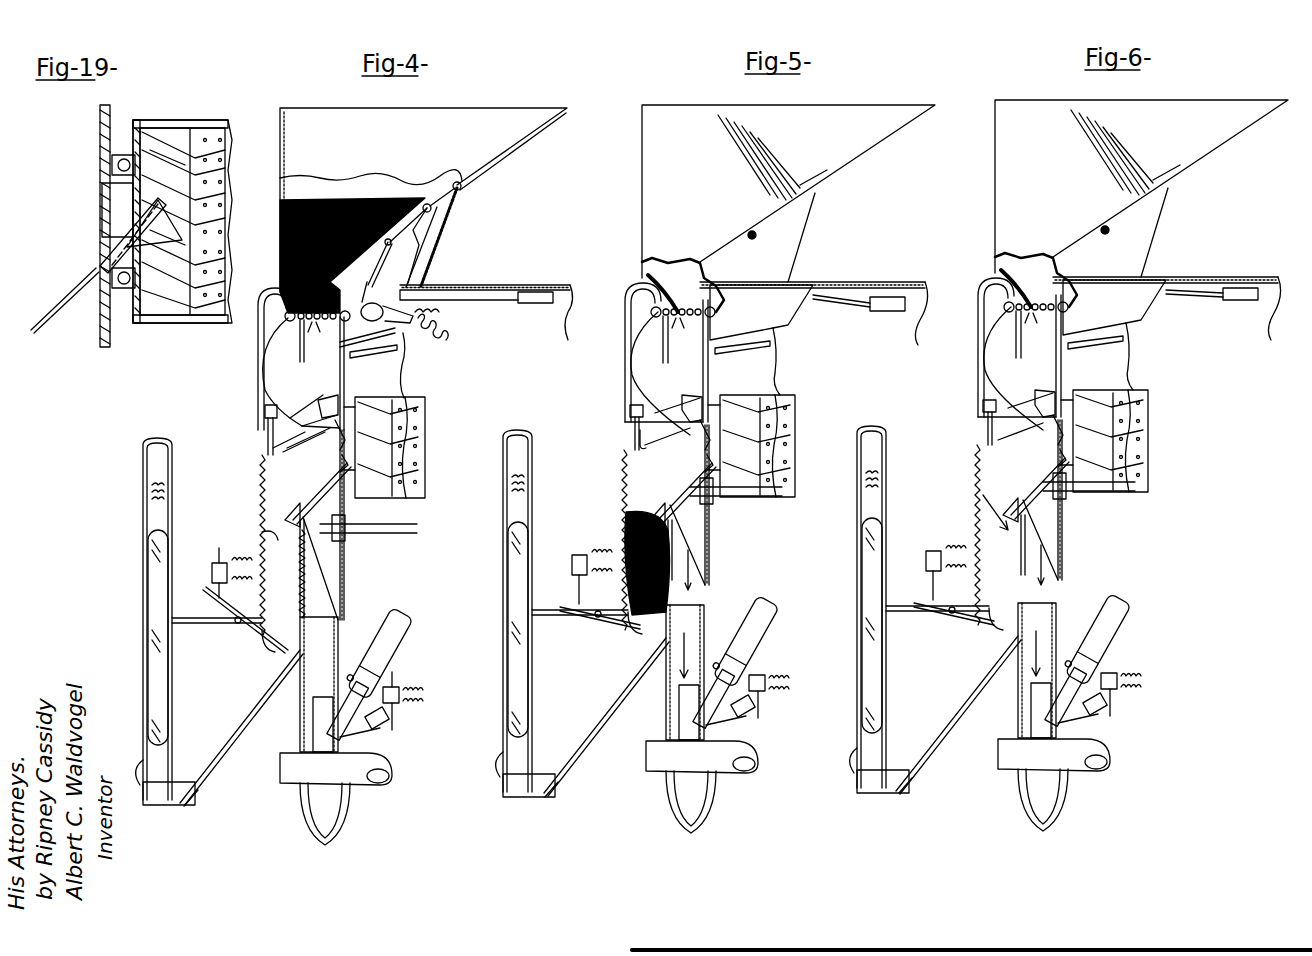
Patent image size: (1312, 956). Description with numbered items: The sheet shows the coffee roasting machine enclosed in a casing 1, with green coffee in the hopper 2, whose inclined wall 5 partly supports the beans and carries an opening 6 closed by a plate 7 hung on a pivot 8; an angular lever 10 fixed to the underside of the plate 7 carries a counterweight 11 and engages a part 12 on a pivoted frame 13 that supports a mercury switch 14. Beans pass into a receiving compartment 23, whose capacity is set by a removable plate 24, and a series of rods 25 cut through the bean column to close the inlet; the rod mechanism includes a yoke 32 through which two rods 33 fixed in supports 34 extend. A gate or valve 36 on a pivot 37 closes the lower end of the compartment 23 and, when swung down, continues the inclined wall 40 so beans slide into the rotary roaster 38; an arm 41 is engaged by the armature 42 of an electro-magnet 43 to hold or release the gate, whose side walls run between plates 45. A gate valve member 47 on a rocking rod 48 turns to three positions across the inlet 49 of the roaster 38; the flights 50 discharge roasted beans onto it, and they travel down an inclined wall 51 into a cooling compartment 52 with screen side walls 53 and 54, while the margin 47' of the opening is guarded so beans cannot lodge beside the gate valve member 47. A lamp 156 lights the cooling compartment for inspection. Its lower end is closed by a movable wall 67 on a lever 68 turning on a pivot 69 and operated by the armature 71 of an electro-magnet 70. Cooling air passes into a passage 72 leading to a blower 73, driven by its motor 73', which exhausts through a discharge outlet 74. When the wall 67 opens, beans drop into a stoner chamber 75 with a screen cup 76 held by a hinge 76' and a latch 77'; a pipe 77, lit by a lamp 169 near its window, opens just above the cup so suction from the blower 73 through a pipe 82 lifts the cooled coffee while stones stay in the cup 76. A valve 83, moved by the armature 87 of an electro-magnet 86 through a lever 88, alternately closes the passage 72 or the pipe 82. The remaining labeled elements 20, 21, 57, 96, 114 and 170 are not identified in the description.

In FIG. 4, the casing 1 is at (551, 285).
In FIG. 5, the casing 1 is at (885, 282).
In FIG. 6, the casing 1 is at (1117, 332).
In FIG. 4, the hopper 2 is at (280, 149).
In FIG. 5, the hopper 2 is at (650, 160).
In FIG. 6, the hopper 2 is at (1130, 203).
In FIG. 4, the inclined wall 5 is at (455, 181).
In FIG. 5, the inclined wall 5 is at (835, 170).
In FIG. 6, the inclined wall 5 is at (1206, 166).
In FIG. 4, the opening 6 is at (375, 268).
In FIG. 4, the plate 7 is at (385, 280).
In FIG. 4, the pivot 8 is at (432, 207).
In FIG. 4, the angular lever 10 is at (426, 239).
In FIG. 5, the angular lever 10 is at (843, 305).
In FIG. 6, the angular lever 10 is at (1194, 304).
In FIG. 4, the counterweight 11 is at (535, 303).
In FIG. 5, the counterweight 11 is at (890, 311).
In FIG. 6, the counterweight 11 is at (1240, 303).
In FIG. 4, the part 12 is at (424, 260).
In FIG. 4, the pivoted frame 13 is at (361, 288).
In FIG. 4, the mercury switch 14 is at (399, 321).
In FIG. 5, the mercury switch 14 is at (732, 325).
In FIG. 4, the plate 20 is at (442, 220).
In FIG. 5, the plate 20 is at (799, 240).
In FIG. 6, the plate 20 is at (1164, 221).
In FIG. 5, the pivot 21 is at (752, 240).
In FIG. 6, the pivot 21 is at (1113, 243).
In FIG. 4, the receiving compartment 23 is at (264, 362).
In FIG. 5, the receiving compartment 23 is at (630, 382).
In FIG. 6, the receiving compartment 23 is at (993, 368).
In FIG. 4, the plate 24 is at (305, 352).
In FIG. 5, the plate 24 is at (669, 352).
In FIG. 6, the plate 24 is at (1031, 334).
In FIG. 4, the rods 25 is at (316, 332).
In FIG. 5, the rods 25 is at (682, 329).
In FIG. 6, the rods 25 is at (1035, 324).
In FIG. 4, the yoke 32 is at (304, 452).
In FIG. 4, the rods 33 is at (316, 312).
In FIG. 5, the rods 33 is at (715, 310).
In FIG. 6, the rods 33 is at (1047, 313).
In FIG. 4, the supports 34 is at (290, 314).
In FIG. 5, the supports 34 is at (705, 305).
In FIG. 6, the supports 34 is at (1047, 292).
In FIG. 4, the gate or valve 36 is at (328, 436).
In FIG. 5, the gate or valve 36 is at (695, 428).
In FIG. 6, the gate or valve 36 is at (1048, 423).
In FIG. 4, the pivot 37 is at (341, 399).
In FIG. 5, the pivot 37 is at (667, 443).
In FIG. 6, the pivot 37 is at (1020, 436).
In FIG. 19, the rotary roaster 38 is at (222, 122).
In FIG. 4, the rotary roaster 38 is at (415, 435).
In FIG. 5, the rotary roaster 38 is at (782, 425).
In FIG. 6, the rotary roaster 38 is at (1127, 441).
In FIG. 4, the inclined wall 40 is at (312, 408).
In FIG. 5, the inclined wall 40 is at (669, 394).
In FIG. 6, the inclined wall 40 is at (1025, 389).
In FIG. 4, the arm 41 is at (290, 456).
In FIG. 4, the armature 42 is at (268, 440).
In FIG. 4, the electro-magnet 43 is at (265, 406).
In FIG. 4, the plates 45 is at (322, 398).
In FIG. 5, the plates 45 is at (692, 398).
In FIG. 6, the plates 45 is at (1045, 391).
In FIG. 19, the gate valve member 47 is at (126, 217).
In FIG. 4, the gate valve member 47 is at (329, 464).
In FIG. 5, the gate valve member 47 is at (692, 463).
In FIG. 6, the gate valve member 47 is at (1052, 451).
In FIG. 19, the marginal portion 47' is at (97, 210).
In FIG. 19, the rocking rod 48 is at (125, 235).
In FIG. 4, the rocking rod 48 is at (340, 484).
In FIG. 5, the rocking rod 48 is at (705, 480).
In FIG. 6, the rocking rod 48 is at (1048, 500).
In FIG. 19, the inlet 49 is at (160, 323).
In FIG. 4, the inlet 49 is at (412, 400).
In FIG. 5, the inlet 49 is at (748, 395).
In FIG. 6, the inlet 49 is at (1103, 378).
In FIG. 19, the flights 50 is at (215, 195).
In FIG. 4, the flights 50 is at (388, 400).
In FIG. 5, the flights 50 is at (778, 395).
In FIG. 6, the flights 50 is at (1111, 436).
In FIG. 4, the inclined wall 51 is at (315, 492).
In FIG. 5, the inclined wall 51 is at (683, 495).
In FIG. 6, the inclined wall 51 is at (1036, 490).
In FIG. 4, the cooling compartment 52 is at (262, 532).
In FIG. 5, the cooling compartment 52 is at (626, 535).
In FIG. 6, the cooling compartment 52 is at (975, 514).
In FIG. 4, the side wall 53 is at (258, 500).
In FIG. 5, the side wall 53 is at (622, 470).
In FIG. 6, the side wall 53 is at (962, 535).
In FIG. 5, the side wall 54 is at (680, 560).
In FIG. 6, the side wall 54 is at (1059, 542).
In FIG. 19, the lever 57 is at (65, 300).
In FIG. 4, the lever 57 is at (315, 580).
In FIG. 4, the movable wall 67 is at (270, 654).
In FIG. 5, the movable wall 67 is at (642, 631).
In FIG. 6, the movable wall 67 is at (998, 627).
In FIG. 4, the lever 68 is at (250, 635).
In FIG. 5, the lever 68 is at (600, 629).
In FIG. 6, the lever 68 is at (954, 624).
In FIG. 4, the pivot 69 is at (235, 624).
In FIG. 5, the pivot 69 is at (589, 627).
In FIG. 6, the pivot 69 is at (944, 622).
In FIG. 4, the electro-magnet 70 is at (212, 574).
In FIG. 5, the electro-magnet 70 is at (581, 563).
In FIG. 6, the electro-magnet 70 is at (935, 559).
In FIG. 4, the armature 71 is at (219, 551).
In FIG. 5, the armature 71 is at (566, 589).
In FIG. 6, the armature 71 is at (919, 585).
In FIG. 4, the passage 72 is at (330, 635).
In FIG. 5, the passage 72 is at (697, 672).
In FIG. 6, the passage 72 is at (1050, 670).
In FIG. 4, the blower 73 is at (327, 775).
In FIG. 5, the blower 73 is at (690, 763).
In FIG. 6, the blower 73 is at (1041, 764).
In FIG. 4, the motor 73' is at (309, 814).
In FIG. 5, the motor 73' is at (676, 802).
In FIG. 6, the motor 73' is at (1027, 800).
In FIG. 4, the discharge outlet 74 is at (389, 775).
In FIG. 5, the discharge outlet 74 is at (758, 767).
In FIG. 6, the discharge outlet 74 is at (1111, 760).
In FIG. 4, the stoner chamber 75 is at (218, 752).
In FIG. 5, the stoner chamber 75 is at (606, 717).
In FIG. 6, the stoner chamber 75 is at (958, 715).
In FIG. 4, the screen cup 76 is at (169, 809).
In FIG. 5, the screen cup 76 is at (529, 799).
In FIG. 6, the screen cup 76 is at (883, 795).
In FIG. 4, the hinge 76' is at (201, 807).
In FIG. 5, the hinge 76' is at (567, 787).
In FIG. 6, the hinge 76' is at (916, 784).
In FIG. 4, the pipe 77 is at (143, 619).
In FIG. 5, the pipe 77 is at (508, 611).
In FIG. 6, the pipe 77 is at (884, 607).
In FIG. 4, the latch 77' is at (128, 765).
In FIG. 5, the latch 77' is at (487, 764).
In FIG. 6, the latch 77' is at (839, 762).
In FIG. 4, the pipe 82 is at (398, 632).
In FIG. 5, the pipe 82 is at (735, 662).
In FIG. 6, the pipe 82 is at (1091, 660).
In FIG. 4, the valve 83 is at (313, 712).
In FIG. 5, the valve 83 is at (702, 706).
In FIG. 6, the valve 83 is at (1056, 702).
In FIG. 4, the electro-magnet 86 is at (399, 697).
In FIG. 5, the electro-magnet 86 is at (771, 672).
In FIG. 6, the electro-magnet 86 is at (1121, 668).
In FIG. 4, the armature 87 is at (393, 676).
In FIG. 5, the armature 87 is at (773, 707).
In FIG. 6, the armature 87 is at (1124, 704).
In FIG. 4, the lever 88 is at (388, 722).
In FIG. 5, the lever 88 is at (752, 724).
In FIG. 6, the lever 88 is at (1102, 718).
In FIG. 4, the wall 96 is at (404, 370).
In FIG. 5, the wall 96 is at (776, 370).
In FIG. 4, the rod 114 is at (373, 359).
In FIG. 5, the rod 114 is at (742, 353).
In FIG. 6, the rod 114 is at (1095, 350).
In FIG. 5, the lamp 156 is at (634, 438).
In FIG. 4, the lamp 169 is at (150, 516).
In FIG. 5, the lamp 169 is at (497, 495).
In FIG. 6, the lamp 169 is at (849, 497).
In FIG. 4, the slot 170 is at (148, 652).
In FIG. 5, the slot 170 is at (500, 629).
In FIG. 6, the slot 170 is at (852, 625).